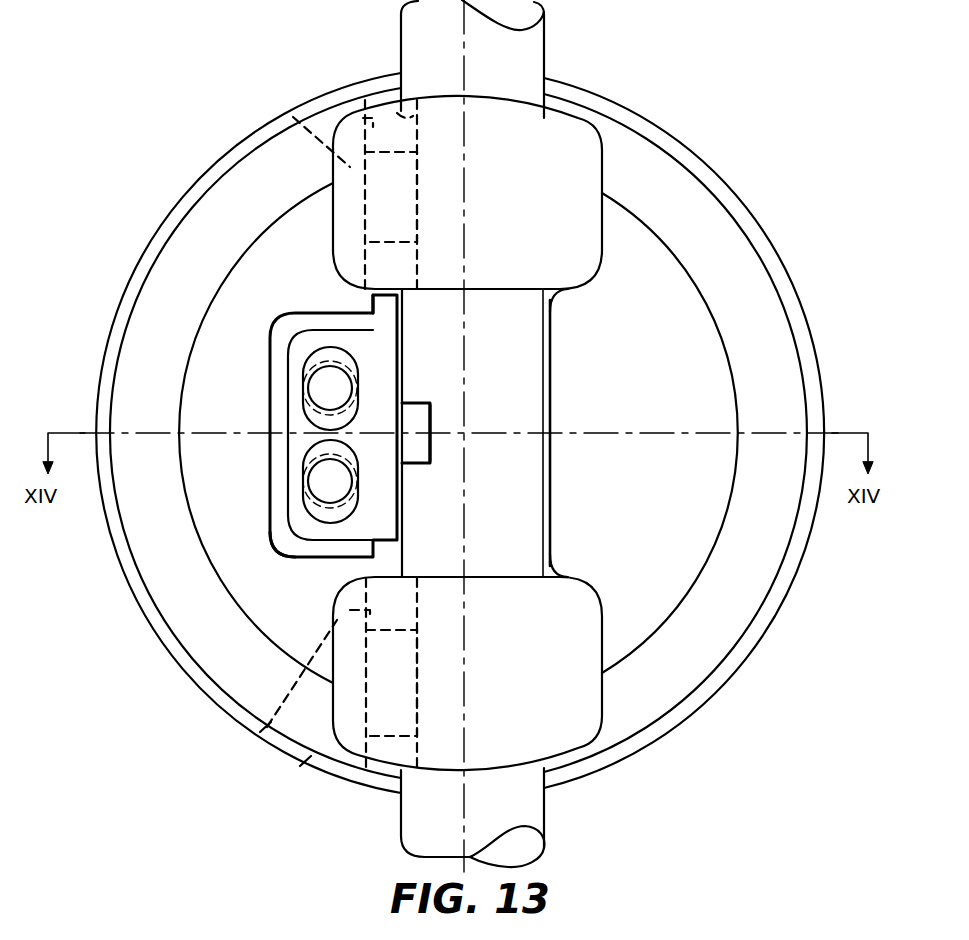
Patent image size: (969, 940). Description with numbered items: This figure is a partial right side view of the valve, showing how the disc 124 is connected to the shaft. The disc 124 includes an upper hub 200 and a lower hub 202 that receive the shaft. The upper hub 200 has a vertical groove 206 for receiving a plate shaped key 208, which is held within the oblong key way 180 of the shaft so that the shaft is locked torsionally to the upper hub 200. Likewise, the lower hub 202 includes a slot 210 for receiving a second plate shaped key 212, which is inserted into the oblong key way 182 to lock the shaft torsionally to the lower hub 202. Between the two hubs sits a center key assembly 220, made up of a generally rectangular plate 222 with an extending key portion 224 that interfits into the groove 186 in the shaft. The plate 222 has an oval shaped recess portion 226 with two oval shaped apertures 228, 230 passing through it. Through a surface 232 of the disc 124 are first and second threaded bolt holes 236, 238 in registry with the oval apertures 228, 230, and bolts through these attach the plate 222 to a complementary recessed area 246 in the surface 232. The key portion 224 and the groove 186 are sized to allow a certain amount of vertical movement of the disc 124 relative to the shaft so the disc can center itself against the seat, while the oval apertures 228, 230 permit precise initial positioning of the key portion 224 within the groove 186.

The disc 124 is at (460, 429).
The oblong key way 180 is at (379, 84).
The oblong key way 182 is at (358, 793).
The groove 186 is at (437, 415).
The upper hub 200 is at (578, 141).
The lower hub 202 is at (578, 724).
The vertical groove 206 is at (364, 83).
The plate shaped key 208 is at (290, 113).
The slot 210 is at (250, 733).
The second plate shaped key 212 is at (290, 770).
The center key assembly 220 is at (270, 341).
The generally rectangular plate 222 is at (377, 333).
The key portion 224 is at (423, 427).
The oval shaped recess portion 226 is at (293, 393).
The oval shaped aperture 228 is at (331, 349).
The oval shaped aperture 230 is at (315, 510).
The surface 232 is at (203, 392).
The first threaded bolt hole 236 is at (338, 378).
The second threaded bolt hole 238 is at (343, 472).
The recessed area 246 is at (297, 553).